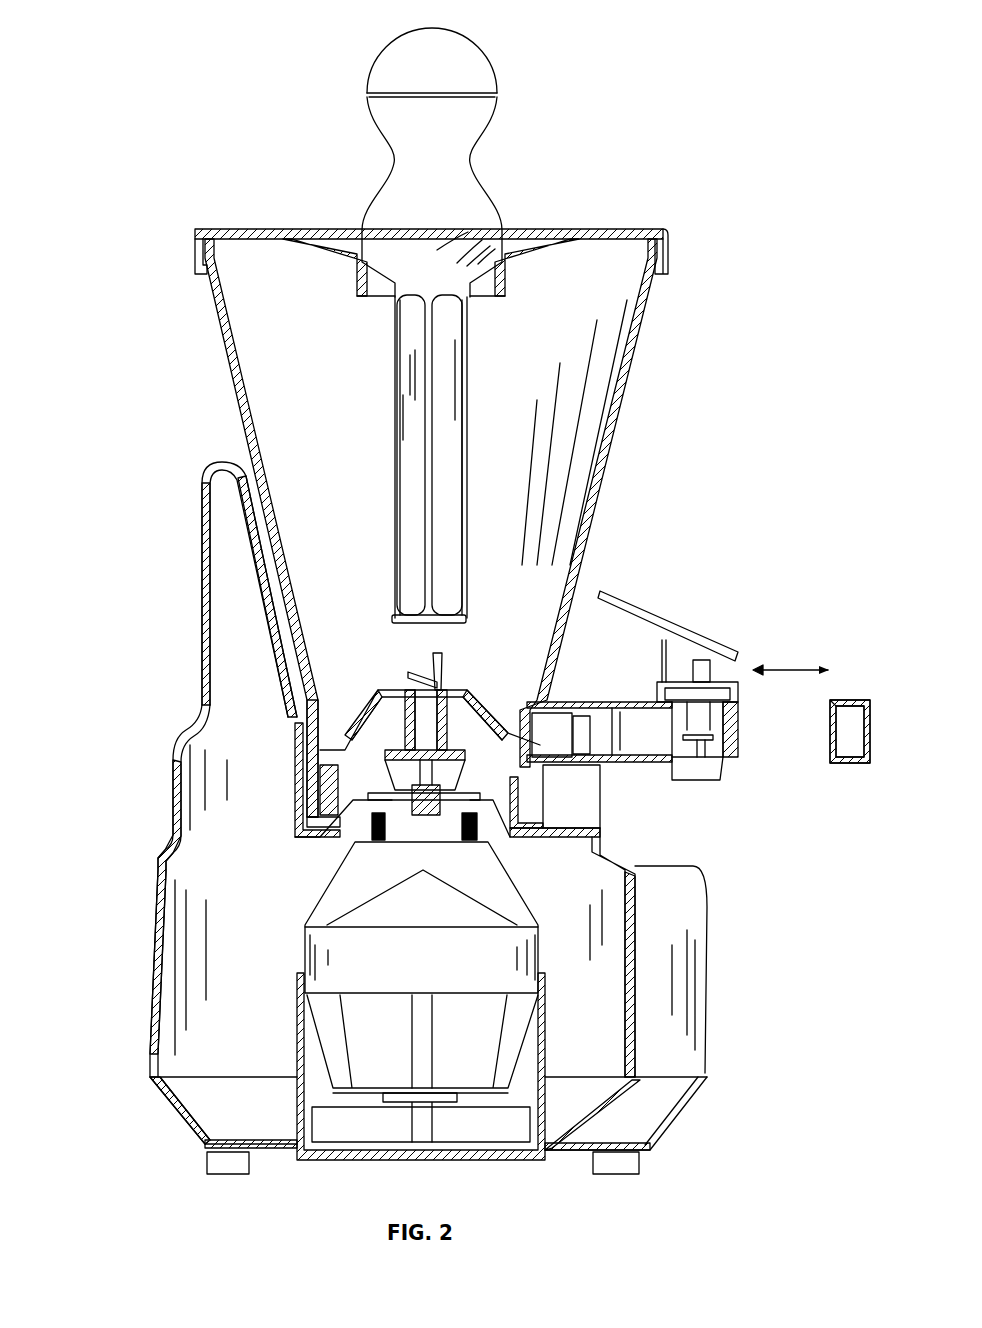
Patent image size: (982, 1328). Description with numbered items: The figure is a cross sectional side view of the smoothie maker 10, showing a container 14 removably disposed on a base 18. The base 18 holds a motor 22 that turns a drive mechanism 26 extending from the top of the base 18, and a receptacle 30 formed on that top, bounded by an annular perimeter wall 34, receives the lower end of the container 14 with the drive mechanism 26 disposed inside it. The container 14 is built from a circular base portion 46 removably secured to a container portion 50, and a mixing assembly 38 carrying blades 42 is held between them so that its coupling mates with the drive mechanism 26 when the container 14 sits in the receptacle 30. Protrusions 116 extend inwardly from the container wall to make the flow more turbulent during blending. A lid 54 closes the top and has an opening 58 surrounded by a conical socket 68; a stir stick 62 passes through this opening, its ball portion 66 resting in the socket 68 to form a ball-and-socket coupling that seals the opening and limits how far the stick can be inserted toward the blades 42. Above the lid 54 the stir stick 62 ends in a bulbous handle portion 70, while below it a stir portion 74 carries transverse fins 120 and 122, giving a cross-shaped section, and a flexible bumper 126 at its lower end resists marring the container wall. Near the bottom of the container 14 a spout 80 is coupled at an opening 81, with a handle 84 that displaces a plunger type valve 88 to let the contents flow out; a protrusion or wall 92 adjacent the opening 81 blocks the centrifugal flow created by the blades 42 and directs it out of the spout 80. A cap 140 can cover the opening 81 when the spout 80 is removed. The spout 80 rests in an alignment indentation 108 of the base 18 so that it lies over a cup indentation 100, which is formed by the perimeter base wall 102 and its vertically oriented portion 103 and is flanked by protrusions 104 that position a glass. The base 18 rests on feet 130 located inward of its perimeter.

The smoothie maker 10 is at (163, 652).
The container 14 is at (612, 487).
The base 18 is at (444, 878).
The motor 22 is at (303, 962).
The drive mechanism 26 is at (495, 852).
The receptacle 30 is at (405, 756).
The perimeter wall 34 is at (303, 800).
The mixing assembly 38 is at (410, 700).
The blades 42 is at (405, 686).
The base portion 46 is at (313, 727).
The container portion 50 is at (452, 533).
The lid 54 is at (431, 230).
The opening 58 is at (370, 300).
The stir stick 62 is at (444, 162).
The ball portion 66 is at (467, 233).
The socket 68 is at (333, 231).
The handle portion 70 is at (360, 65).
The stir portion 74 is at (479, 459).
The spout 80 is at (705, 661).
The opening 81 is at (532, 733).
The handle 84 is at (660, 600).
The valve 88 is at (713, 737).
The protrusion or wall 92 is at (513, 727).
The indentation 100 is at (658, 998).
The perimeter base wall 102 is at (152, 955).
The vertically oriented portion 103 is at (635, 923).
The protrusions 104 is at (708, 963).
The alignment indentation 108 is at (575, 793).
The protrusions 116 is at (268, 430).
The fin 120 is at (445, 468).
The fin 122 is at (432, 437).
The bumper 126 is at (467, 620).
The feet 130 is at (204, 1160).
The cap 140 is at (845, 700).